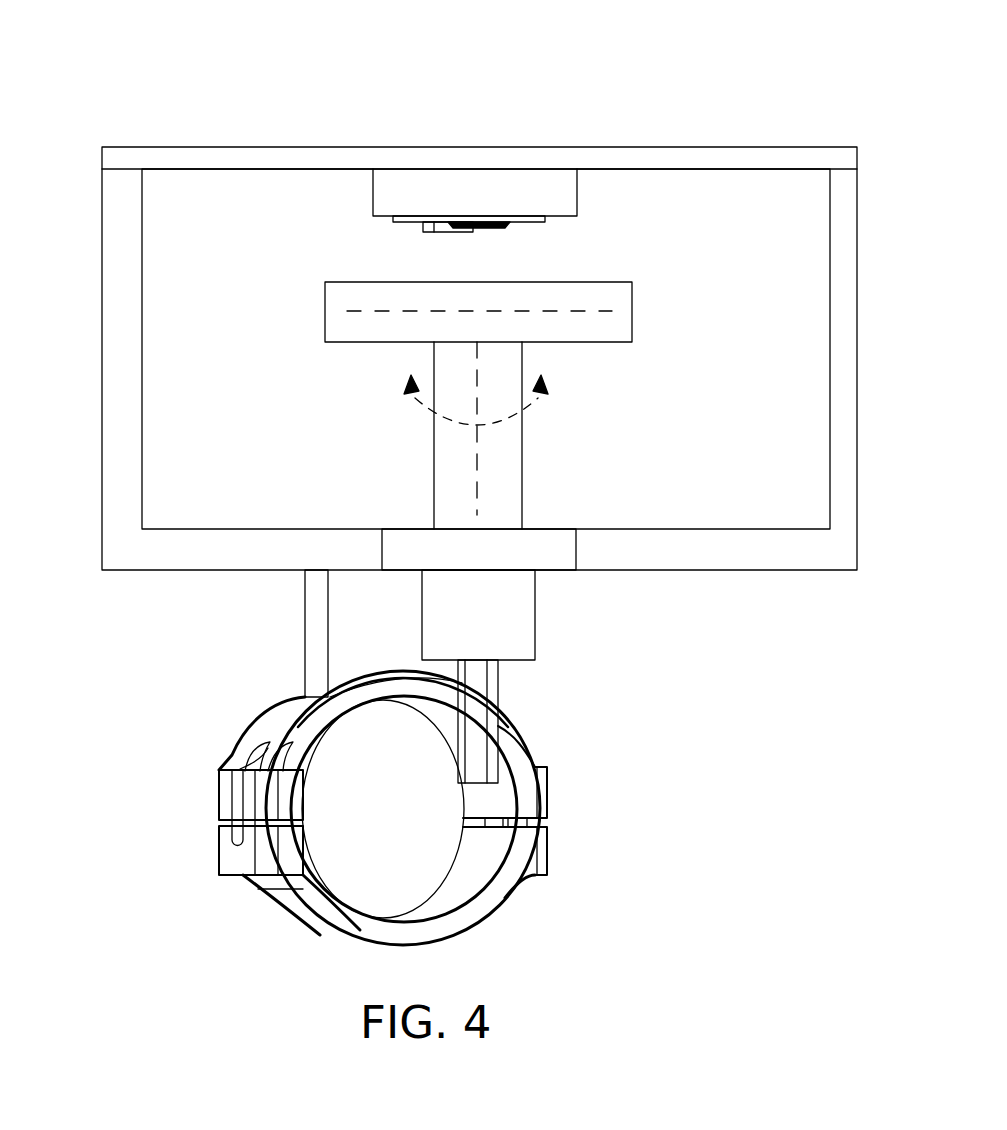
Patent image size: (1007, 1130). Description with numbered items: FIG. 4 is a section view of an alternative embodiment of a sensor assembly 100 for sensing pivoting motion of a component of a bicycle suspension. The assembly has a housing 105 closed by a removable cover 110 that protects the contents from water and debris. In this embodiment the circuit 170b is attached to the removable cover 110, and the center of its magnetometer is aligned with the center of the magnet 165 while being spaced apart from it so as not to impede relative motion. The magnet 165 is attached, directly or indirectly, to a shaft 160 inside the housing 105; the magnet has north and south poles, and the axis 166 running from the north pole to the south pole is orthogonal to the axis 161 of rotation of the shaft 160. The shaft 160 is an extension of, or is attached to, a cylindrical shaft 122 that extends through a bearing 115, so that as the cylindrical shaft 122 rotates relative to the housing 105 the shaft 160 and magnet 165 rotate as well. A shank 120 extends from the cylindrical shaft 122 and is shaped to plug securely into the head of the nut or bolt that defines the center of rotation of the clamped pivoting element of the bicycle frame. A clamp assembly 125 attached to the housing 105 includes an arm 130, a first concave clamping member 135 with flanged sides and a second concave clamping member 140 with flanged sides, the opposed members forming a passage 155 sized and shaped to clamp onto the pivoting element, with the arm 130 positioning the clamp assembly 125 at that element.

The sensor assembly 100 is at (390, 120).
The housing 105 is at (101, 360).
The removable cover 110 is at (658, 155).
The bearing 115 is at (553, 548).
The shank 120 is at (494, 690).
The cylindrical shaft 122 is at (515, 635).
The clamp assembly 125 is at (462, 943).
The arm 130 is at (318, 628).
The first concave clamping member 135 is at (262, 722).
The second concave clamping member 140 is at (517, 889).
The passage 155 is at (347, 862).
The shaft 160 is at (524, 465).
The axis of rotation 161 is at (475, 507).
The magnet 165 is at (540, 283).
The axis 166 is at (405, 313).
The circuit 170b is at (402, 205).